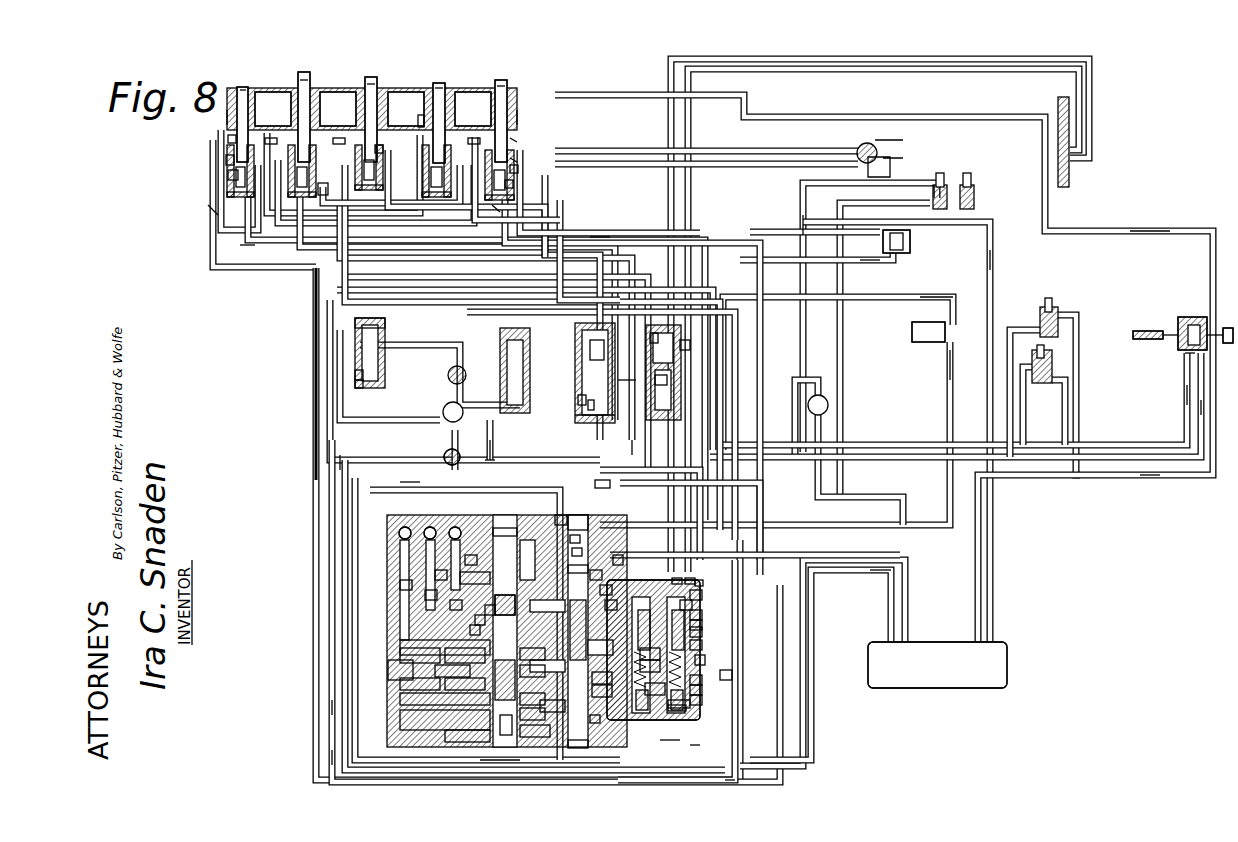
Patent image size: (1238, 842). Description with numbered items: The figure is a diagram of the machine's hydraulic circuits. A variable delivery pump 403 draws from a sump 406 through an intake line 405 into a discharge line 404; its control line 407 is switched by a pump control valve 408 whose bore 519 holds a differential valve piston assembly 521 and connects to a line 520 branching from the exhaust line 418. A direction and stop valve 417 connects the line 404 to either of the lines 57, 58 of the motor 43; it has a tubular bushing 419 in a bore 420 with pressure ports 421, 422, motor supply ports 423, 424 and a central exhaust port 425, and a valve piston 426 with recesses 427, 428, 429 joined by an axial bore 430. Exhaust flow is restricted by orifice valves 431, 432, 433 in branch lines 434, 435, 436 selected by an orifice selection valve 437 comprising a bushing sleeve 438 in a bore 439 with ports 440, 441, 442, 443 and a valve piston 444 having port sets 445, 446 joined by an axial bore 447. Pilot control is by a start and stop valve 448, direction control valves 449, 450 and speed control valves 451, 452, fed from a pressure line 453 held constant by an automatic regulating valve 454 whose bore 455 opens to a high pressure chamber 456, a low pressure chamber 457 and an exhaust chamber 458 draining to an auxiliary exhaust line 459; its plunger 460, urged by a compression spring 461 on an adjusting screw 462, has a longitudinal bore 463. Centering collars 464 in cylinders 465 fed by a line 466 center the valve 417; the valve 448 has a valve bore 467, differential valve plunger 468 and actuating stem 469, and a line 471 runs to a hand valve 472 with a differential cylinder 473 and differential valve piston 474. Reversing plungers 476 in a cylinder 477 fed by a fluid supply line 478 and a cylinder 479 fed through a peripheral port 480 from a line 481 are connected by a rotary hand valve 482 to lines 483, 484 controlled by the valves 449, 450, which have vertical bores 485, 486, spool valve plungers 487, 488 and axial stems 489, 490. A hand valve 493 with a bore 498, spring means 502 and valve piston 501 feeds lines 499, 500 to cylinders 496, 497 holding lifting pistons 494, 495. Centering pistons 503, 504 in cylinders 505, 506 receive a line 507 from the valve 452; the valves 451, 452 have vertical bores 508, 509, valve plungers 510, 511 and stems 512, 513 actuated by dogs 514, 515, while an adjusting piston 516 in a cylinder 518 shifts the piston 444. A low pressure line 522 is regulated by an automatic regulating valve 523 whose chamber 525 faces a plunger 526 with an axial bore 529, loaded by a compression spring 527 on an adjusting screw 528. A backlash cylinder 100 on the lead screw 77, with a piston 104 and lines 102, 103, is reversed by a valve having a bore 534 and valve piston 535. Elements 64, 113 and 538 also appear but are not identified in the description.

The motor 43 is at (912, 334).
The motor line 57 is at (930, 297).
The motor line 58 is at (950, 367).
The main conduit 64 is at (1148, 231).
The lead screw 77 is at (1145, 331).
The cylinder 100 is at (1190, 352).
The pressure fluid supply line 102 is at (1185, 394).
The pressure fluid supply line 103 is at (1203, 408).
The piston 104 is at (1196, 318).
The knob 113 is at (1229, 328).
The variable delivery pump 403 is at (910, 242).
The discharge line 404 is at (865, 260).
The intake line 405 is at (993, 260).
The sump 406 is at (1007, 662).
The control line 407 is at (800, 225).
The pump control valve 408 is at (590, 515).
The direction and stop valve 417 is at (590, 748).
The exhaust line 418 is at (880, 575).
The tubular bushing 419 is at (552, 707).
The bore 420 is at (532, 700).
The pressure port 421 is at (604, 679).
The pressure port 422 is at (504, 604).
The motor supply port 423 is at (654, 667).
The motor supply port 424 is at (700, 615).
The central exhaust port 425 is at (654, 655).
The valve piston 426 is at (610, 590).
The end recess 427 is at (604, 691).
The central recess 428 is at (700, 625).
The end recess 429 is at (615, 605).
The axial bore 430 is at (531, 672).
The adjustable restriction orifice valve 431 is at (405, 528).
The orifice valve 432 is at (430, 530).
The orifice valve 433 is at (455, 533).
The branch line 434 is at (430, 595).
The branch line 435 is at (455, 605).
The branch line 436 is at (480, 620).
The orifice selection valve 437 is at (445, 720).
The bushing sleeve 438 is at (420, 684).
The bore 439 is at (452, 671).
The port 440 is at (465, 655).
The port 441 is at (400, 670).
The port 442 is at (490, 610).
The port 443 is at (445, 640).
The valve piston 444 is at (475, 578).
The set of ports 445 is at (420, 655).
The set of ports 446 is at (475, 630).
The axial bore 447 is at (465, 684).
The start and stop valve 448 is at (370, 77).
The direction control valve 449 is at (240, 85).
The direction control valve 450 is at (501, 80).
The speed control valve 451 is at (303, 72).
The speed control valve 452 is at (438, 83).
The pressure line 453 is at (628, 380).
The automatic regulating valve 454 is at (700, 680).
The bore 455 is at (705, 660).
The high pressure chamber 456 is at (700, 632).
The low pressure chamber 457 is at (690, 605).
The exhaust chamber 458 is at (700, 690).
The auxiliary exhaust line 459 is at (517, 160).
The plunger 460 is at (700, 595).
The compression spring 461 is at (700, 700).
The adjusting screw 462 is at (690, 707).
The longitudinal bore 463 is at (700, 645).
The centering collar 464 is at (600, 575).
The cylinder 465 is at (575, 540).
The line 466 is at (340, 140).
The valve bore 467 is at (406, 108).
The differential valve plunger 468 is at (382, 150).
The actuating stem 469 is at (372, 84).
The line 471 is at (314, 292).
The hand valve 472 is at (690, 345).
The differential cylinder 473 is at (665, 380).
The differential valve piston 474 is at (652, 338).
The reversing plunger 476 is at (576, 570).
The cylinder 477 is at (535, 731).
The fluid supply line 478 is at (328, 758).
The cylinder 479 is at (620, 560).
The peripheral port 480 is at (578, 552).
The fluid supply line 481 is at (492, 458).
The rotary hand valve 482 is at (452, 464).
The line 483 is at (474, 140).
The line 484 is at (272, 140).
The vertical bore 485 is at (228, 118).
The vertical bore 486 is at (515, 120).
The spool valve plunger 487 is at (228, 138).
The spool valve plunger 488 is at (515, 140).
The axial stem 489 is at (244, 92).
The axial stem 490 is at (503, 86).
The hand valve 493 is at (578, 418).
The lifting piston 494 is at (228, 160).
The lifting piston 495 is at (515, 170).
The cylinder 496 is at (230, 175).
The cylinder 497 is at (512, 185).
The bore 498 is at (580, 402).
The line 499 is at (250, 245).
The line 500 is at (600, 235).
The valve piston 501 is at (590, 405).
The spring means 502 is at (600, 350).
The centering piston 503 is at (445, 700).
The centering piston 504 is at (405, 585).
The cylinder 505 is at (467, 737).
The cylinder 506 is at (440, 575).
The line 507 is at (314, 441).
The vertical bore 508 is at (273, 108).
The vertical bore 509 is at (473, 108).
The valve plunger 510 is at (338, 108).
The valve plunger 511 is at (420, 122).
The stem 512 is at (306, 80).
The stem 513 is at (440, 88).
The dog 514 is at (325, 190).
The dog 515 is at (500, 760).
The adjusting piston 516 is at (470, 560).
The cylinder 518 is at (500, 530).
The bore 519 is at (605, 485).
The line 520 is at (410, 482).
The differential valve piston assembly 521 is at (560, 515).
The low pressure line 522 is at (636, 448).
The automatic regulating valve 523 is at (690, 580).
The chamber 525 is at (680, 580).
The plunger 526 is at (700, 582).
The compression spring 527 is at (657, 690).
The adjusting screw 528 is at (672, 712).
The axial bore 529 is at (730, 675).
The bore 534 is at (358, 375).
The valve piston 535 is at (358, 388).
The valve 538 is at (365, 320).